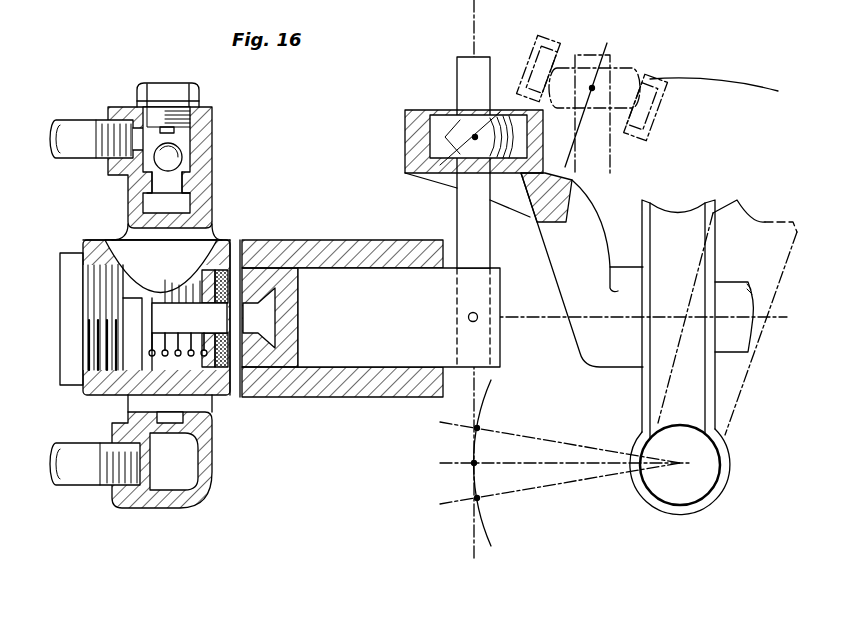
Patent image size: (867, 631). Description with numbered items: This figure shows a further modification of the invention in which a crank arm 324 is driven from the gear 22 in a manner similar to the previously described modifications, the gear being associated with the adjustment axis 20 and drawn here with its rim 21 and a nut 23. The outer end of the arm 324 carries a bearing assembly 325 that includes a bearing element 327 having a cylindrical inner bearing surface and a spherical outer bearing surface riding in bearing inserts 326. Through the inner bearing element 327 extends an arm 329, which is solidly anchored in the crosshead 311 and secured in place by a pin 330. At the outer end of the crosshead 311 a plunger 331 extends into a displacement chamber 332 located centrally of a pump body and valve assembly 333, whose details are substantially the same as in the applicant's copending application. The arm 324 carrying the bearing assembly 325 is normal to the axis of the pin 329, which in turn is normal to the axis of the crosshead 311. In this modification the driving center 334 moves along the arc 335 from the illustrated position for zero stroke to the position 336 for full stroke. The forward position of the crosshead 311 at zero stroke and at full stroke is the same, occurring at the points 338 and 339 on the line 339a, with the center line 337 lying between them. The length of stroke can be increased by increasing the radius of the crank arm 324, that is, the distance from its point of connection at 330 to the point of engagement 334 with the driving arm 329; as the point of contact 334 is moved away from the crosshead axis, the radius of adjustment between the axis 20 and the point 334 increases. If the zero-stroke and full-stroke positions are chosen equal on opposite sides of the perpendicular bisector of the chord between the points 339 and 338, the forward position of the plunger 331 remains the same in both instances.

The axis 20 is at (697, 478).
The wheel rim 21 is at (728, 456).
The gear 22 is at (724, 200).
The hub nut 23 is at (740, 341).
The crosshead 311 is at (358, 278).
The arm 324 is at (554, 240).
The bearing assembly 325 is at (502, 103).
The bearing inserts 326 is at (410, 160).
The bearing element 327 is at (442, 128).
The arm 329 is at (458, 233).
The pin 330 is at (478, 318).
The plunger 331 is at (188, 317).
The displacement chamber 332 is at (188, 360).
The pump body and valve assembly 333 is at (213, 188).
The driving center 334 is at (475, 137).
The arc 335 is at (732, 80).
The position 336 is at (525, 112).
The center line 337 is at (474, 463).
The point 338 is at (477, 428).
The point 339 is at (477, 498).
The line 339a is at (477, 545).